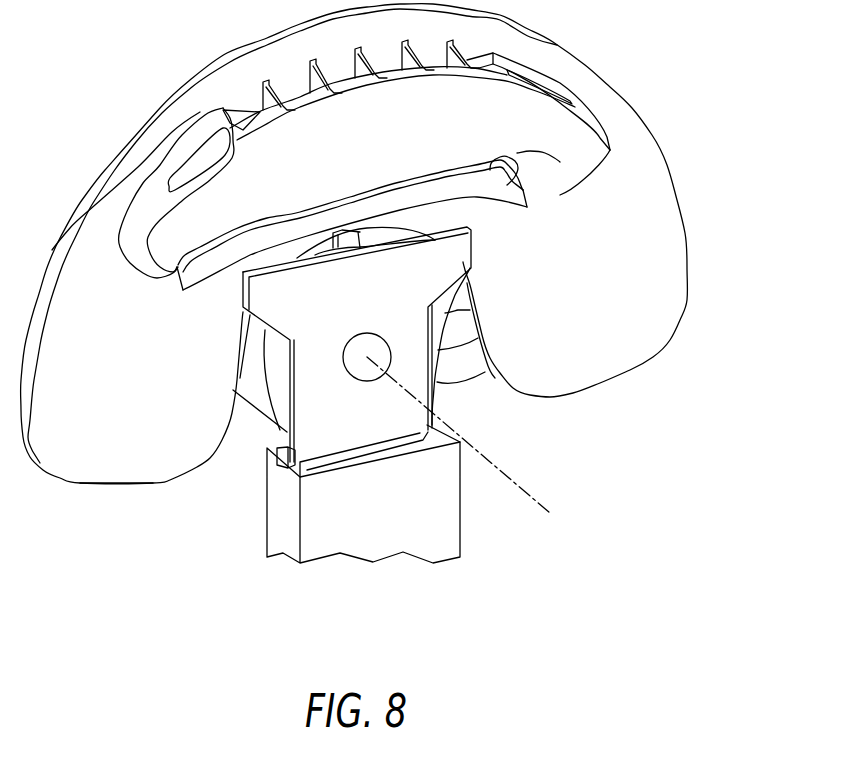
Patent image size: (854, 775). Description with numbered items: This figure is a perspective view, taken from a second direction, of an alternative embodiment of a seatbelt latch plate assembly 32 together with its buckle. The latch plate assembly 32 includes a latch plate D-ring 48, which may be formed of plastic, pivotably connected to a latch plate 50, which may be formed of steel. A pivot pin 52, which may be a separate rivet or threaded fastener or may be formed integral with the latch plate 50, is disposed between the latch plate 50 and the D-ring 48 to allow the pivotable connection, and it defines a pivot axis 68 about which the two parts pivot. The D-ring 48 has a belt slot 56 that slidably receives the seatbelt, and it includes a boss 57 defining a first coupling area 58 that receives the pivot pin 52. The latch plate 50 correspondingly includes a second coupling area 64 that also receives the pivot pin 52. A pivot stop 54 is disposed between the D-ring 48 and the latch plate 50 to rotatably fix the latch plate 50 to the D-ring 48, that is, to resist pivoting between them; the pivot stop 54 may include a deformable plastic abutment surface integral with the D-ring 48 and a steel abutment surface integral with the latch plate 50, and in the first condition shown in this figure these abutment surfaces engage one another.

The seatbelt latch plate assembly 32 is at (663, 147).
The latch plate D-ring 48 is at (108, 487).
The latch plate 50 is at (430, 398).
The pivot pin 52 is at (362, 381).
The pivot stop 54 is at (341, 231).
The belt slot 56 is at (507, 165).
The boss 57 is at (440, 382).
The first coupling area 58 is at (455, 347).
The second coupling area 64 is at (283, 390).
The pivot axis 68 is at (533, 500).